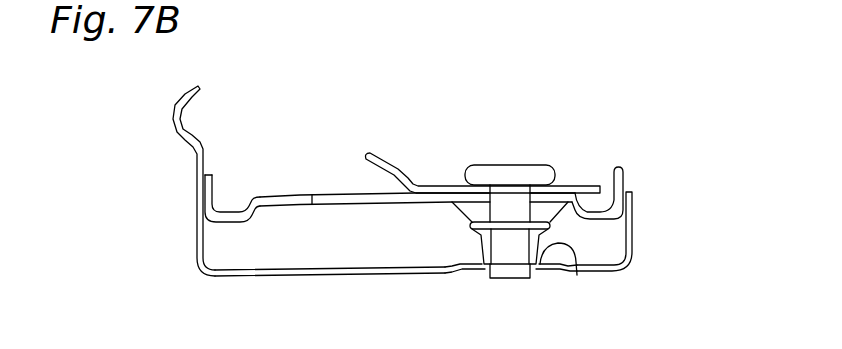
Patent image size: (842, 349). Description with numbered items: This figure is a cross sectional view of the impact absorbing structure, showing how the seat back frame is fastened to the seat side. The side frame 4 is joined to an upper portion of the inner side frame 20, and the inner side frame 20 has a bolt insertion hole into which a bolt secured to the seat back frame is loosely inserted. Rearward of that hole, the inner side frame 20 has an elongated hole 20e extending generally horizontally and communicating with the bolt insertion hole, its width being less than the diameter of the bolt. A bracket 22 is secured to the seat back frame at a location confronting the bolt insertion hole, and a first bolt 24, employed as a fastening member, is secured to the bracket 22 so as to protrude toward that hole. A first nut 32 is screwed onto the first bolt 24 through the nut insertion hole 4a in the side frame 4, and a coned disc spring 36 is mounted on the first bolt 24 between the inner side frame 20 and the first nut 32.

The side frame 4 is at (258, 277).
The nut insertion hole 4a is at (477, 270).
The inner side frame 20 is at (624, 177).
The elongated hole 20e is at (377, 204).
The bracket 22 is at (399, 168).
The first bolt 24 is at (521, 163).
The first nut 32 is at (577, 275).
The coned disc spring 36 is at (560, 207).